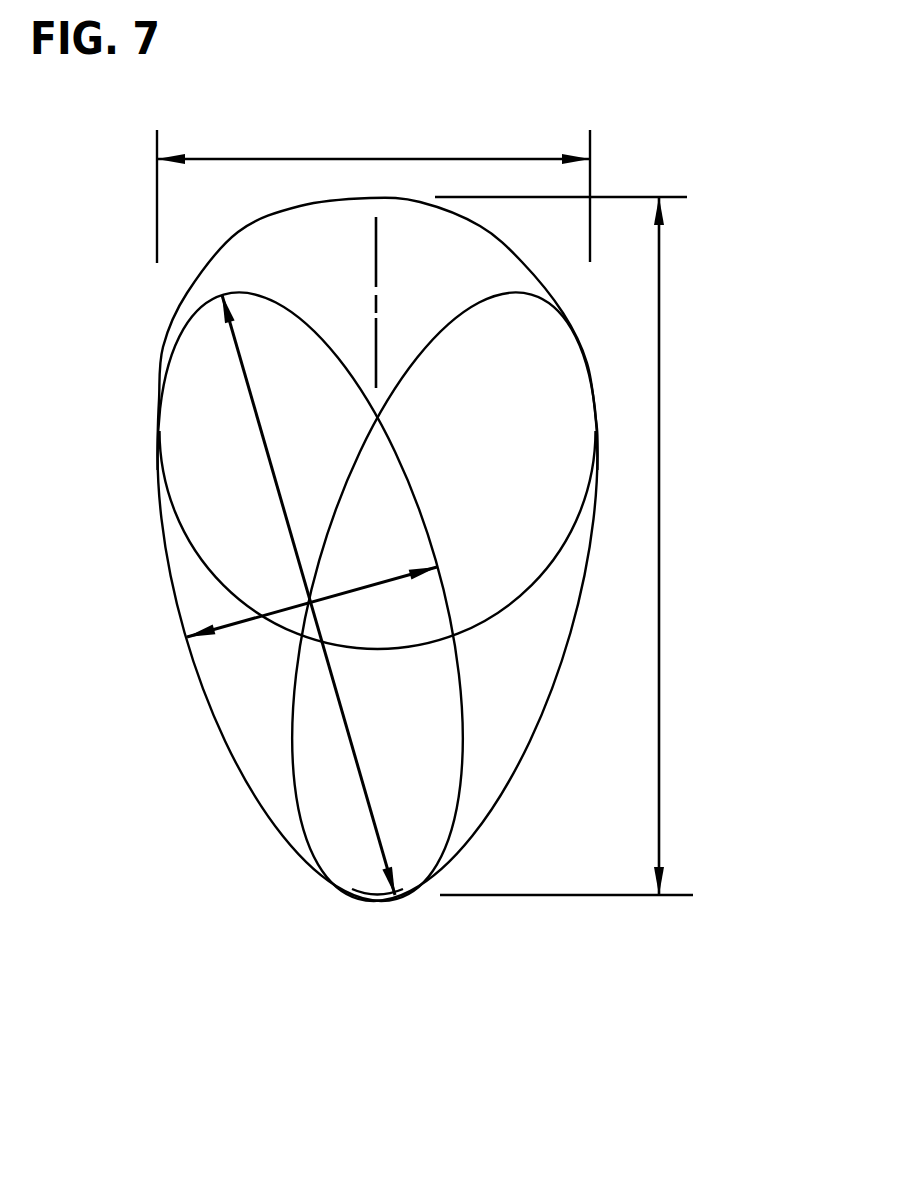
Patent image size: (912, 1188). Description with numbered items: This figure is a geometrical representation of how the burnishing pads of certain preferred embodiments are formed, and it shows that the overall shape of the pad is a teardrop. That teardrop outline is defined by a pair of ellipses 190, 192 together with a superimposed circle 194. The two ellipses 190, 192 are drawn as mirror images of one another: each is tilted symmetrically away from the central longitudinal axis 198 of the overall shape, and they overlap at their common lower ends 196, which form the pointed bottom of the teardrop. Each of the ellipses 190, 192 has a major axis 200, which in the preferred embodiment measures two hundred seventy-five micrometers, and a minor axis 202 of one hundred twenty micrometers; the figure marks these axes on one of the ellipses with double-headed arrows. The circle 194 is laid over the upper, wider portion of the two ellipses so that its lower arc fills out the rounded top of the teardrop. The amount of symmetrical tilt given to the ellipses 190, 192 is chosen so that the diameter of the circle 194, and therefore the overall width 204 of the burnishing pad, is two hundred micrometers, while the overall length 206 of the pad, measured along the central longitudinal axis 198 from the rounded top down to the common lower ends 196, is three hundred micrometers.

The ellipse 190 is at (248, 785).
The ellipse 192 is at (517, 777).
The circle 194 is at (517, 597).
The common lower ends 196 is at (380, 897).
The central longitudinal axis 198 is at (376, 280).
The major axis 200 is at (255, 410).
The minor axis 202 is at (232, 602).
The overall width 204 is at (375, 158).
The overall length 206 is at (659, 511).